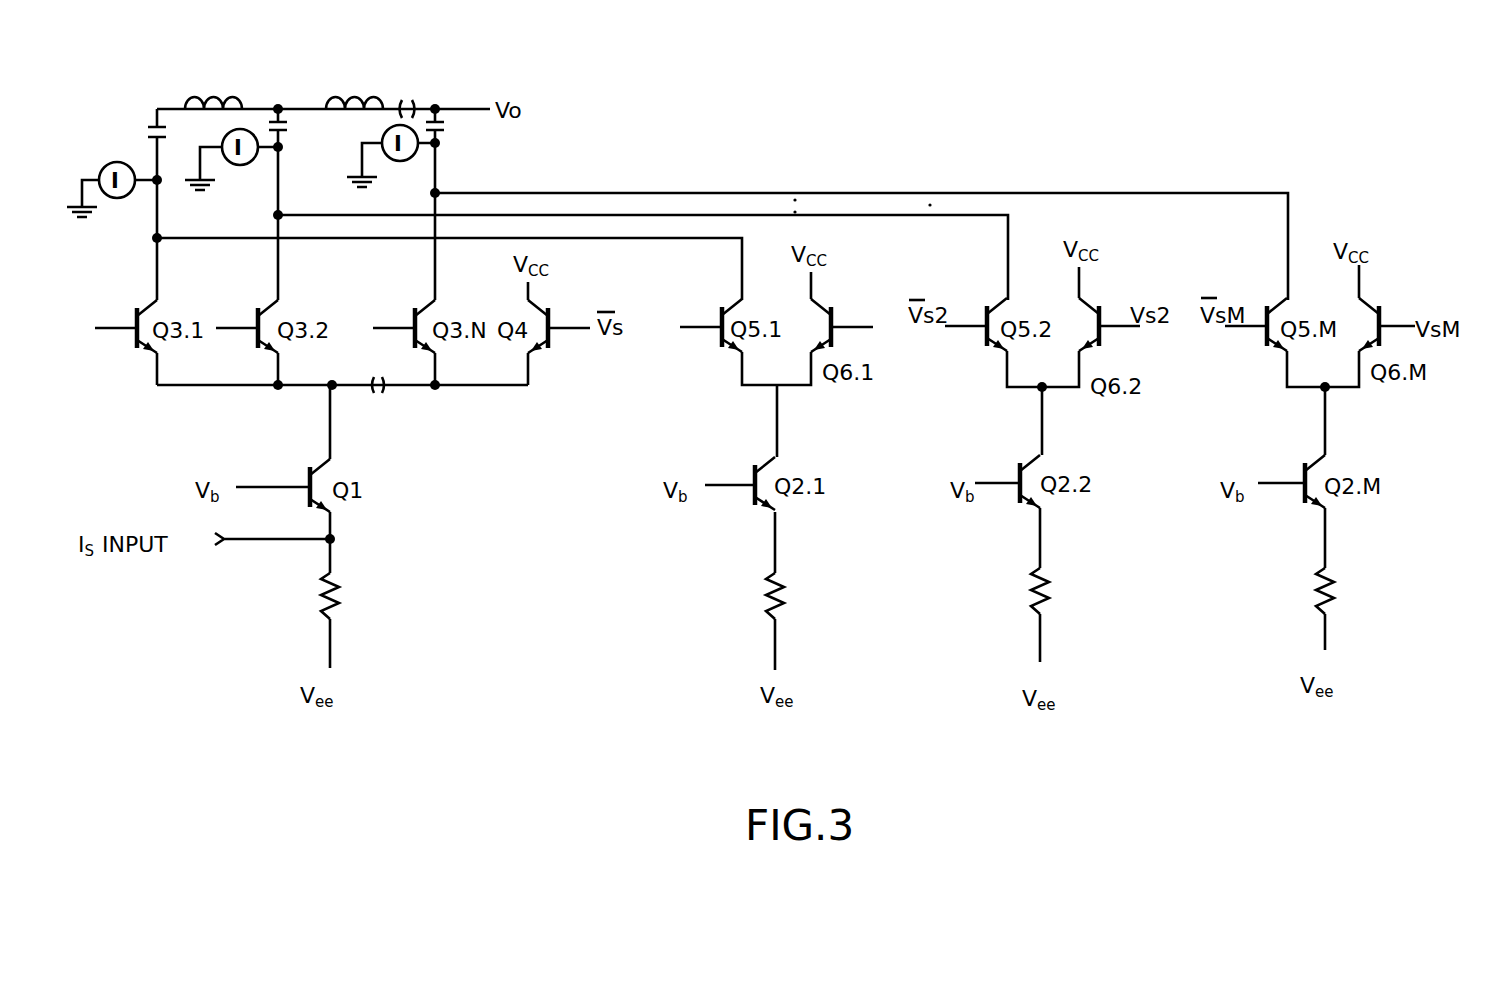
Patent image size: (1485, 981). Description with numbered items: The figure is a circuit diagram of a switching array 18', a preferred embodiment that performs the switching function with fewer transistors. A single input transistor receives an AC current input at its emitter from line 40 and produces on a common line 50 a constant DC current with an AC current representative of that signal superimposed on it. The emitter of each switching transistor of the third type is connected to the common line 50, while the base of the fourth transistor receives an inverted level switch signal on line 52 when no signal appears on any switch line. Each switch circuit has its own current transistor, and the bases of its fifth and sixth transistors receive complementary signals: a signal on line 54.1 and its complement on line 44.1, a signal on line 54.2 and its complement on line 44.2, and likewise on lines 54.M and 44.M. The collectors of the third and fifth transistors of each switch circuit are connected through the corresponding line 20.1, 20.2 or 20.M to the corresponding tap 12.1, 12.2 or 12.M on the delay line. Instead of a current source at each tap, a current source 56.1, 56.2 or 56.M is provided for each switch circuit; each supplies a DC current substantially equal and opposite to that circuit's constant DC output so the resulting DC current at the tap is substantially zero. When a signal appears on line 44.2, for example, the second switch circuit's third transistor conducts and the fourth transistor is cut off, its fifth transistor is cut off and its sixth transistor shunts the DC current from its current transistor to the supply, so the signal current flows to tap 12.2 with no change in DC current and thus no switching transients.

The tap 12.1 is at (157, 107).
The tap 12.2 is at (278, 107).
The tap 12.M is at (435, 107).
The line 20.1 is at (172, 140).
The line 20.2 is at (292, 122).
The line 20.M is at (443, 125).
The current source 56.1 is at (118, 162).
The current source 56.2 is at (224, 127).
The current source 56.M is at (400, 120).
The switch line 44.1 is at (114, 328).
The switch line 44.2 is at (235, 325).
The switch line 44.M is at (396, 326).
The line 52 is at (569, 327).
The common line 50 is at (235, 388).
The line 54.1 is at (693, 330).
The line 54.2 is at (960, 330).
The line 54.M is at (1233, 328).
The line 40 is at (278, 543).
The switching array 18' is at (577, 653).